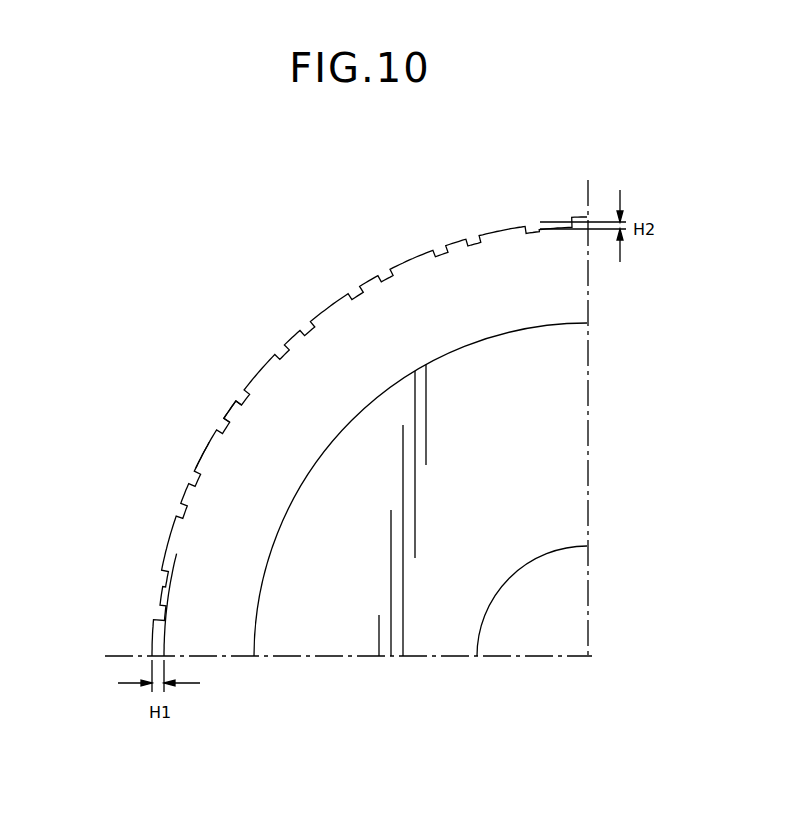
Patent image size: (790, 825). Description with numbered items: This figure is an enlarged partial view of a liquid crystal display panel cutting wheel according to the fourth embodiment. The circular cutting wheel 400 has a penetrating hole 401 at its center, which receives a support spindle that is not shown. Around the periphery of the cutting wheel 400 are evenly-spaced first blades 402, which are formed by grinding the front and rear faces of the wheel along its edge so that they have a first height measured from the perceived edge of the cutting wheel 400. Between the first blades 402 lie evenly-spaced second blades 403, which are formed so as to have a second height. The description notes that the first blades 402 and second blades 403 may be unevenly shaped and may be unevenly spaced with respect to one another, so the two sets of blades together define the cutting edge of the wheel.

The cutting wheel 400 is at (272, 291).
The penetrating hole 401 is at (553, 608).
The first blades 402 is at (198, 452).
The second blades 403 is at (232, 412).